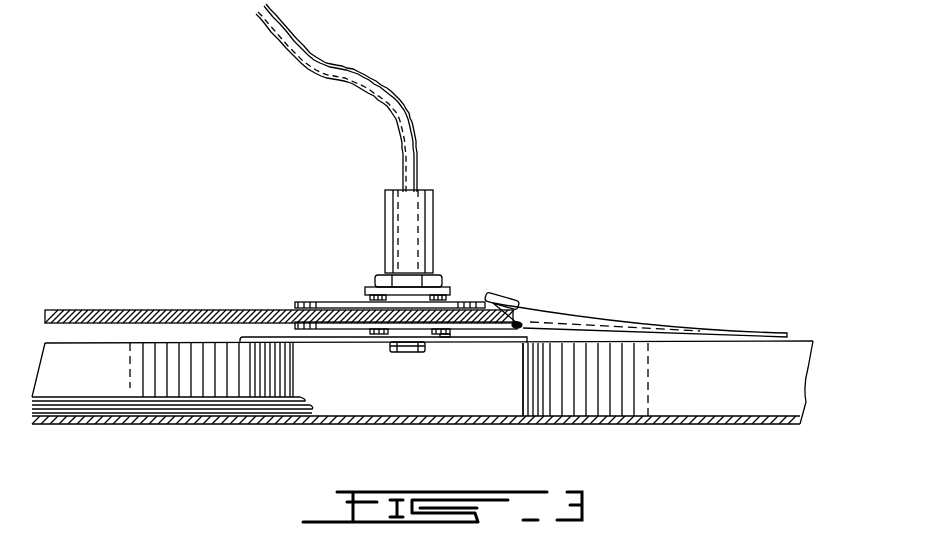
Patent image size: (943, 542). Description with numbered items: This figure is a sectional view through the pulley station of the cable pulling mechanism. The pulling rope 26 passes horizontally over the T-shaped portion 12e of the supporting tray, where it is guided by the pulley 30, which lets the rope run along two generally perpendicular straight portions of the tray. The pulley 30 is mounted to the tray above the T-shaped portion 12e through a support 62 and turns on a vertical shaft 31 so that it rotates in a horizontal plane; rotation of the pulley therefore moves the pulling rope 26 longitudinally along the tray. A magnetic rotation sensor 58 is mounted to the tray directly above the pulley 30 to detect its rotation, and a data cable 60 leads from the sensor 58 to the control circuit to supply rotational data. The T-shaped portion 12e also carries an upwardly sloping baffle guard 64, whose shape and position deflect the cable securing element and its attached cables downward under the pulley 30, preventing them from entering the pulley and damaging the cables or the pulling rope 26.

The T-shaped portion 12e is at (402, 390).
The pulling rope 26 is at (168, 312).
The pulley 30 is at (463, 298).
The vertical shaft 31 is at (410, 352).
The magnetic rotation sensor 58 is at (412, 228).
The data cable 60 is at (380, 93).
The support 62 is at (283, 340).
The baffle guard 64 is at (567, 315).